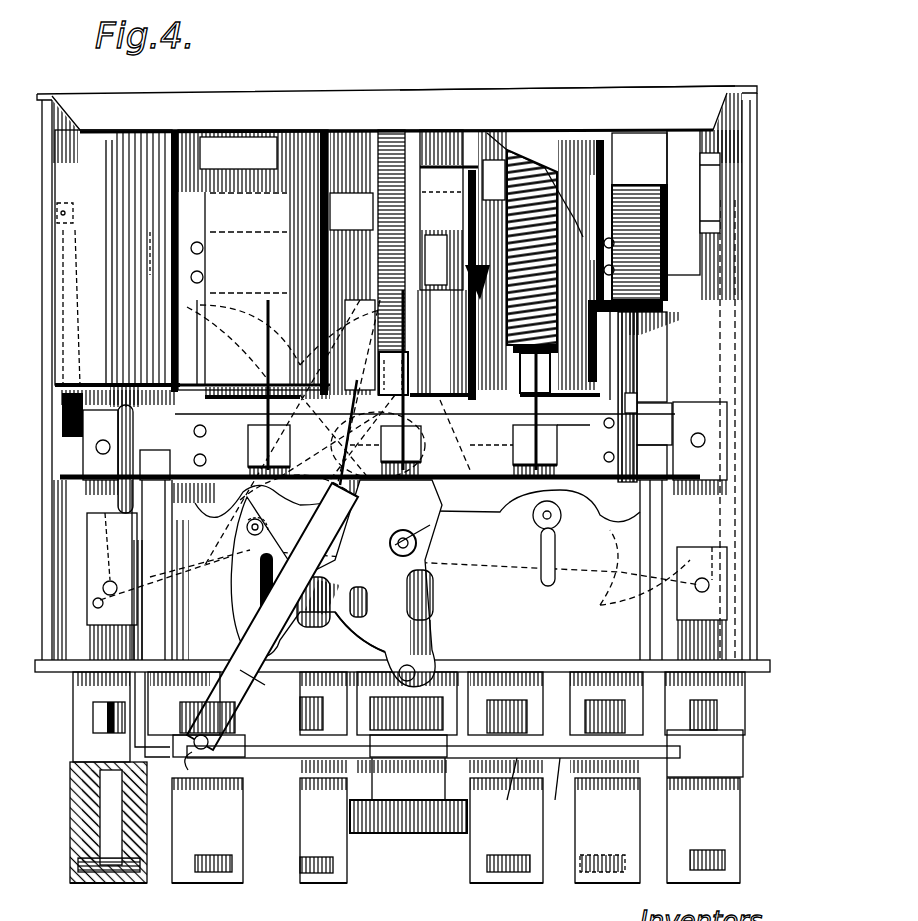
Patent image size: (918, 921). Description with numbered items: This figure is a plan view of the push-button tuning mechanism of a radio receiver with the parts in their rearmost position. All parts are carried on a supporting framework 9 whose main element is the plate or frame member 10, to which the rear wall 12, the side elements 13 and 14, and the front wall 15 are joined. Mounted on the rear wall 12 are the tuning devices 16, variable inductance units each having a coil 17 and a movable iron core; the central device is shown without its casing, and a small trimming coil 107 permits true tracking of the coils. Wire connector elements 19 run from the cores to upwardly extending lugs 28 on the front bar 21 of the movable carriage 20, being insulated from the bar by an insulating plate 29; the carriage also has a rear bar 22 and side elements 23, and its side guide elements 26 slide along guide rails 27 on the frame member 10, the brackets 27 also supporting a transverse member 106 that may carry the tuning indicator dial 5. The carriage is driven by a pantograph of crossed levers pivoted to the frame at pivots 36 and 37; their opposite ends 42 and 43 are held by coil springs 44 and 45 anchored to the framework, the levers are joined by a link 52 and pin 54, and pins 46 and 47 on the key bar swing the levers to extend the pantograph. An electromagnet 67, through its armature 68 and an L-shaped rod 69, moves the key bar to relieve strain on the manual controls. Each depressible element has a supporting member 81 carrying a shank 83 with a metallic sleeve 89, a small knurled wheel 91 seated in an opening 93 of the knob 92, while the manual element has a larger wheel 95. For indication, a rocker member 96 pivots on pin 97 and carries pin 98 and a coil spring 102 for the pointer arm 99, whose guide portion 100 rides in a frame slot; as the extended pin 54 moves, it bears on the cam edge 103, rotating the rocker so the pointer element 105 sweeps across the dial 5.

The tuning indicator dial 5 is at (556, 789).
The supporting framework 9 is at (557, 93).
The main frame member 10 is at (723, 368).
The rear wall 12 is at (349, 93).
The framework element 13 is at (50, 278).
The framework element 14 is at (755, 336).
The front wall 15 is at (747, 673).
The tuning device 16 is at (240, 264).
The coil 17 is at (378, 251).
The wire connector element 19 is at (270, 409).
The movable carriage 20 is at (607, 371).
The front bar 21 is at (380, 436).
The rear bar 22 is at (440, 238).
The side element 23 is at (610, 352).
The side guide element 26 is at (638, 430).
The guide rail 27 is at (662, 418).
The lug 28 is at (292, 446).
The insulating plate 29 is at (583, 426).
The pivot 36 is at (416, 509).
The pivot 37 is at (650, 520).
The lever end 42 is at (112, 586).
The lever end 43 is at (645, 578).
The coil spring 44 is at (80, 292).
The coil spring 45 is at (748, 298).
The pin 46 is at (245, 560).
The pin 47 is at (561, 521).
The link 52 is at (430, 522).
The pin 54 is at (418, 545).
The electromagnet 67 is at (83, 182).
The armature 68 is at (110, 395).
The L-shaped rod 69 is at (112, 476).
The supporting member 81 is at (85, 737).
The shank 83 is at (93, 713).
The metallic sleeve 89 is at (125, 858).
The knurled wheel 91 is at (85, 868).
The knob 92 is at (70, 830).
The opening 93 is at (100, 880).
The wheel 95 is at (410, 833).
The rocker member 96 is at (248, 578).
The pin 97 is at (412, 668).
The pin 98 is at (263, 530).
The pointer arm 99 is at (240, 648).
The guide portion 100 is at (393, 367).
The coil spring 102 is at (312, 560).
The cam edge 103 is at (355, 626).
The pointer element 105 is at (187, 772).
The transverse member 106 is at (505, 789).
The trimming coil 107 is at (668, 205).